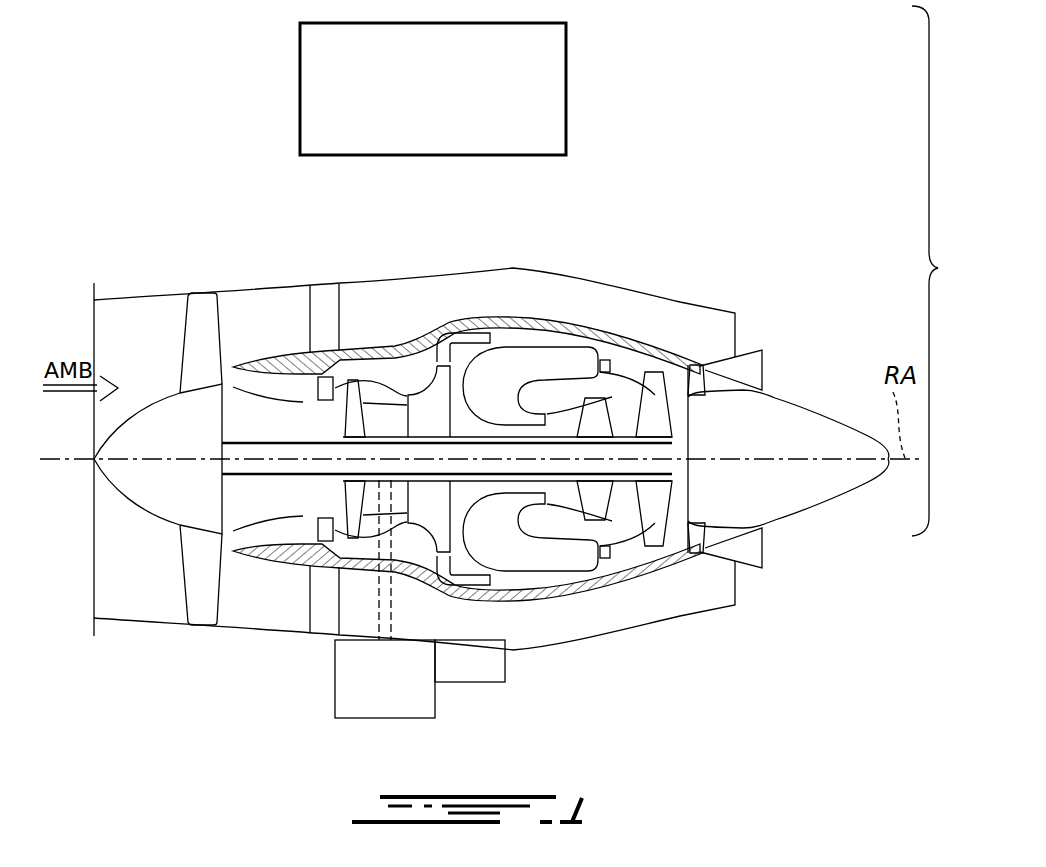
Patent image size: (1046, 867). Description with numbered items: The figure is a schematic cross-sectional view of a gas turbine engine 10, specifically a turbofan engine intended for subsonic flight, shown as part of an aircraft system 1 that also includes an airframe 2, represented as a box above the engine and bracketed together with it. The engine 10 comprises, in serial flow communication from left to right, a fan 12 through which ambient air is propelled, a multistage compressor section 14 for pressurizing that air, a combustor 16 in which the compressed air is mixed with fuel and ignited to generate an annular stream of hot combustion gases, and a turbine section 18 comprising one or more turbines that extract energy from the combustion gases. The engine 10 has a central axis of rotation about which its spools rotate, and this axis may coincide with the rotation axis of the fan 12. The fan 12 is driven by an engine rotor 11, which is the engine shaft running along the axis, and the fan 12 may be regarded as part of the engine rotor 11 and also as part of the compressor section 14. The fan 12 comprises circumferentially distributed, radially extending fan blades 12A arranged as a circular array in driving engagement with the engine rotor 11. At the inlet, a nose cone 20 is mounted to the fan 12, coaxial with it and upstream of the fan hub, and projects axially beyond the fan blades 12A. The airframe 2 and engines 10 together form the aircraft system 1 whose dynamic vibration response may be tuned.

The aircraft system 1 is at (937, 271).
The airframe 2 is at (437, 104).
The gas turbine engine 10 is at (645, 247).
The engine rotor 11 is at (253, 476).
The fan 12 is at (198, 567).
The fan blades 12A is at (203, 310).
The multistage compressor section 14 is at (395, 390).
The combustor 16 is at (532, 372).
The turbine section 18 is at (624, 508).
The nose cone 20 is at (138, 483).